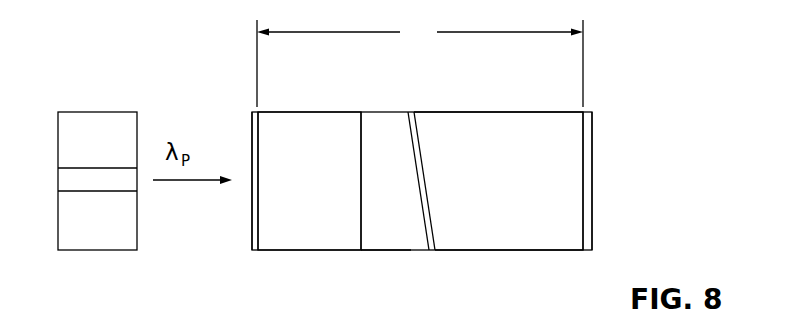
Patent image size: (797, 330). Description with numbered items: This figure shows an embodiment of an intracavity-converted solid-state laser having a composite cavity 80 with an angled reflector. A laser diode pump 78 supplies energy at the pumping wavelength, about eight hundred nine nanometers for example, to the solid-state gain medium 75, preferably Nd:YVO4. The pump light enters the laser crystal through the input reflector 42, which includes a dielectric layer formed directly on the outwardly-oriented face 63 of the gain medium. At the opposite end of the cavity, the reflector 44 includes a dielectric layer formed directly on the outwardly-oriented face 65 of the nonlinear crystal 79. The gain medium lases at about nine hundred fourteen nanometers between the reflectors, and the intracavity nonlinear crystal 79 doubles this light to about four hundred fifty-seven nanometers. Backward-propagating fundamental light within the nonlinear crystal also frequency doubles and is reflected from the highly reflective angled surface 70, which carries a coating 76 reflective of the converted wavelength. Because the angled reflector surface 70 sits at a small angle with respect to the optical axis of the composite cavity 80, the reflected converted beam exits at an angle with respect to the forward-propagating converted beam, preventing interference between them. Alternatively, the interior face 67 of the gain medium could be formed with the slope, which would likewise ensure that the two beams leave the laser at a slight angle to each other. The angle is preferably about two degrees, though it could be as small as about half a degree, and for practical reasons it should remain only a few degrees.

The laser diode pump 78 is at (92, 110).
The input reflector 42 is at (235, 130).
The outwardly-oriented face of the gain medium 63 is at (257, 225).
The outwardly-oriented face of the nonlinear crystal 65 is at (592, 222).
The solid-state gain medium 75 is at (320, 194).
The interior face of the gain medium 67 is at (363, 148).
The nonlinear crystal 79 is at (523, 194).
The coating reflective of the converted wavelength 76 is at (428, 231).
The angled reflector surface 70 is at (407, 213).
The composite cavity 80 is at (420, 63).
The reflector 44 is at (610, 157).